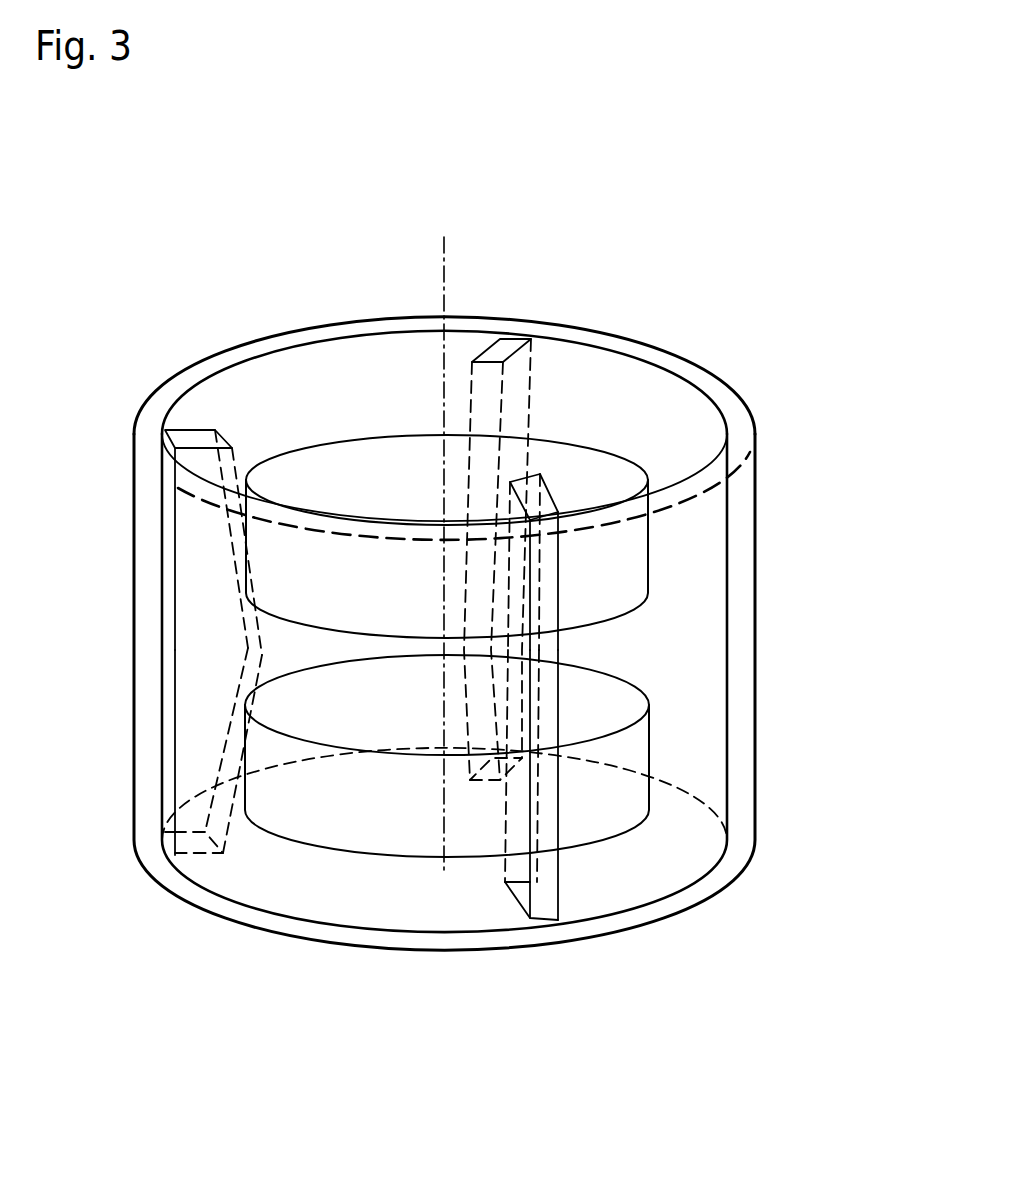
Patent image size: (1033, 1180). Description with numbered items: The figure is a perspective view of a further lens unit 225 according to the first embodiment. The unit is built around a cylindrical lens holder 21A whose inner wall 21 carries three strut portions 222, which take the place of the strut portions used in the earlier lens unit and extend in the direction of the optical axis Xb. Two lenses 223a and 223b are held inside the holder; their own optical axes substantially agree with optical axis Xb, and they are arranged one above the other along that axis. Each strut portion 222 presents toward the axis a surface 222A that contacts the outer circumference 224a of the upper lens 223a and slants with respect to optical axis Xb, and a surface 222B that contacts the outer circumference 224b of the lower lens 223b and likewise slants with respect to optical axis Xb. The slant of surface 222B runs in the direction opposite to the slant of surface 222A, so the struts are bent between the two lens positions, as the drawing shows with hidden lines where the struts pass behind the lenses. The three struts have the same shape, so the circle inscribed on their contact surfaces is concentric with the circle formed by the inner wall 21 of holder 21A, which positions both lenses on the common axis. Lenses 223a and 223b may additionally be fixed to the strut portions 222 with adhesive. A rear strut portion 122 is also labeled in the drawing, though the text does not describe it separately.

The inner wall 21 is at (585, 373).
The lens holder 21A is at (676, 368).
The strip electrode (rear) 122 is at (485, 420).
The strut portions 222 is at (440, 637).
The surface of strut portion 222A is at (220, 482).
The surface of strut portion 222B is at (232, 792).
The lens 223a is at (616, 483).
The lens 223b is at (600, 722).
The outer circumference of lens 224a is at (447, 536).
The outer circumference of lens 224b is at (440, 756).
The lens unit 225 is at (580, 268).
The optical axis Xb is at (440, 248).